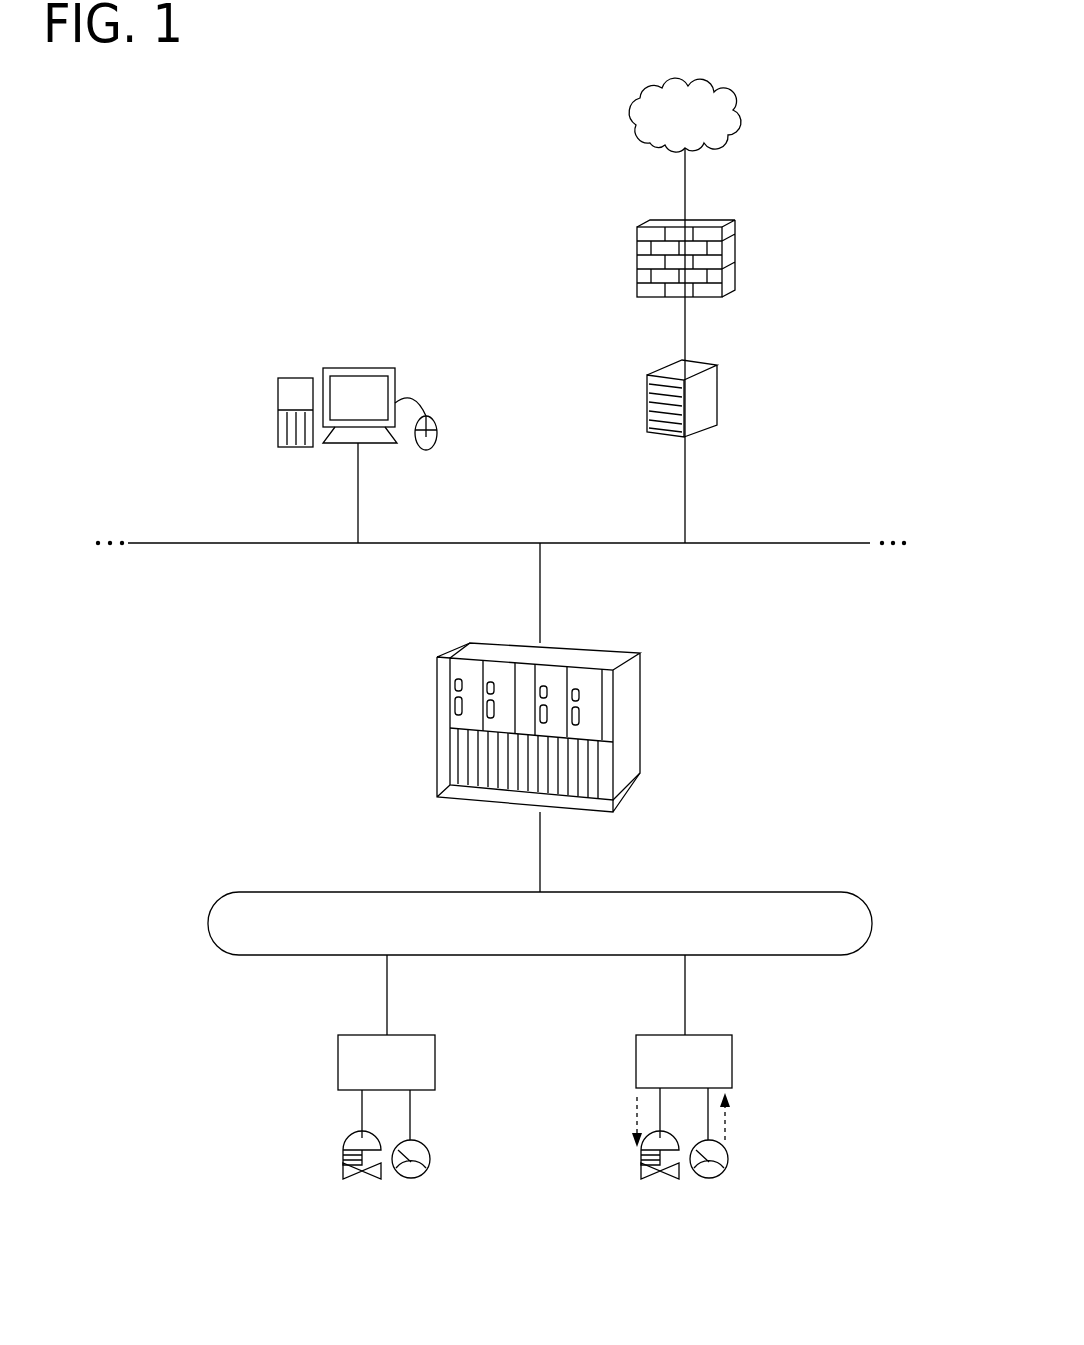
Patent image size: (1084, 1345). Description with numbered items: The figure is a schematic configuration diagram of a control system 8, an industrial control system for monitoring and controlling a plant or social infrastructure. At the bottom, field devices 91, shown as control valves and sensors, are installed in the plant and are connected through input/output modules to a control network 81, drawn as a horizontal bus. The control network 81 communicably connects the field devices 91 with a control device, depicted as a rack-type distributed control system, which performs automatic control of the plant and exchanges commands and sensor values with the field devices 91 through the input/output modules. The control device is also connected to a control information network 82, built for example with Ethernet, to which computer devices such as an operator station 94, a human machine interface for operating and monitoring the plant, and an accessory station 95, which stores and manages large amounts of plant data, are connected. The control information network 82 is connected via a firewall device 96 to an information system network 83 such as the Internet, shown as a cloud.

The control system 8 is at (215, 201).
The control network 81 is at (730, 891).
The control information network 82 is at (147, 545).
The information system network 83 is at (678, 64).
The field device 91 is at (604, 1226).
The operator station 94 is at (279, 378).
The accessory station 95 is at (713, 363).
The firewall device 96 is at (727, 232).